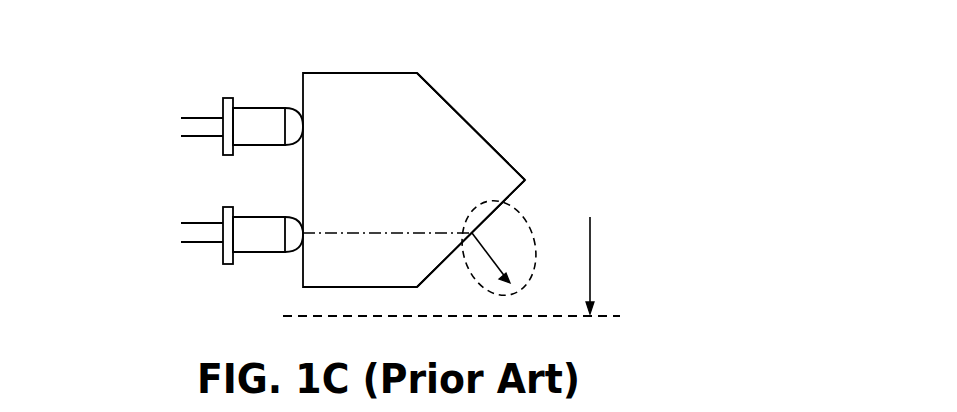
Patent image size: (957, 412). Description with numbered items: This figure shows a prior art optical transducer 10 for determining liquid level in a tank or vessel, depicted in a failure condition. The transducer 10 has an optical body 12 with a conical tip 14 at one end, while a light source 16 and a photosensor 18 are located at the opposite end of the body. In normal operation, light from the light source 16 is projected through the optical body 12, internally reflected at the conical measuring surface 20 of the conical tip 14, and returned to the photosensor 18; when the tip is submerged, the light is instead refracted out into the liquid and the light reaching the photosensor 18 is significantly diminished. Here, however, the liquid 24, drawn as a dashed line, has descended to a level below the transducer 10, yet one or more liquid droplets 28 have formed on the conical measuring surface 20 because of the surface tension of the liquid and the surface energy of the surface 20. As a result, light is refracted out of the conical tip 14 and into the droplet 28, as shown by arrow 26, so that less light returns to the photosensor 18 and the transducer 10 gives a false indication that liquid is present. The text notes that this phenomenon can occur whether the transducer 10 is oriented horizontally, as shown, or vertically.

The optical transducer 10 is at (488, 92).
The optical body 12 is at (343, 73).
The conical tip 14 is at (500, 150).
The light source 16 is at (255, 242).
The photosensor 18 is at (258, 135).
The conical measuring surface 20 is at (440, 270).
The liquid 24 is at (608, 316).
The arrow 26 is at (455, 232).
The liquid droplet 28 is at (518, 218).